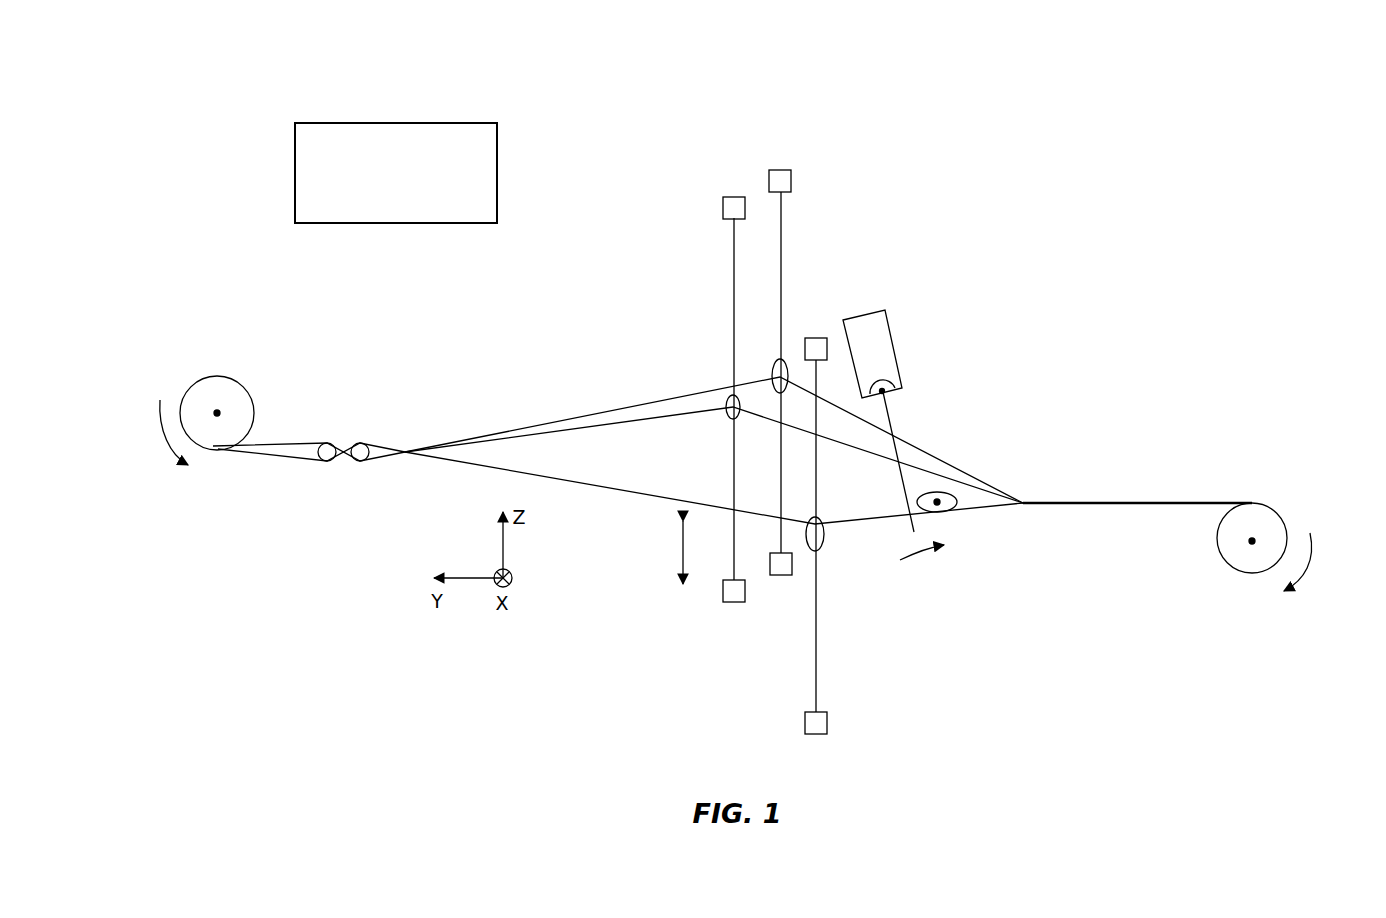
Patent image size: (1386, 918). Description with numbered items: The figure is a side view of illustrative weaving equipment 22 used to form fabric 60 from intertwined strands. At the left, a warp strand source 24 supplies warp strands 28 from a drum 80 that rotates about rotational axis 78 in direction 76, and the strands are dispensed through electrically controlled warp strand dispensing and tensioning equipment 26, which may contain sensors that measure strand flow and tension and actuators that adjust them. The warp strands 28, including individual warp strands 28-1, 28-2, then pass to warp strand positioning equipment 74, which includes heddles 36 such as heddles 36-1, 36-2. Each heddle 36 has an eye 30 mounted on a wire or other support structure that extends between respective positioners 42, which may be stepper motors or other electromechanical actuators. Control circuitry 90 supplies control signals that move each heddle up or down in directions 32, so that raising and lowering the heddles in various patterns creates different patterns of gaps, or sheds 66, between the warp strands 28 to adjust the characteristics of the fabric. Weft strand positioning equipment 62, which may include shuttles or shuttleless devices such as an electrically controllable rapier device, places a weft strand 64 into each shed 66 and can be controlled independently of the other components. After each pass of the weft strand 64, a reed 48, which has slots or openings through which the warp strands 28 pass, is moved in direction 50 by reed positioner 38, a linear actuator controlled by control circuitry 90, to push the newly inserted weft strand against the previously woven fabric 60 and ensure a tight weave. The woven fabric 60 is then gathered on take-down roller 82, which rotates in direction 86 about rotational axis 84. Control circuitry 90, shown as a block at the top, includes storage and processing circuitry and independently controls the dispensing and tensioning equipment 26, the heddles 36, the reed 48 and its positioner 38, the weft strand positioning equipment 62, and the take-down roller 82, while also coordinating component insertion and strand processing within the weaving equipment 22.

The weaving equipment 22 is at (947, 115).
The warp strand source 24 is at (209, 514).
The warp strand dispensing and tensioning equipment 26 is at (312, 488).
The warp strands 28 is at (618, 424).
The warp strand 28-1 is at (844, 445).
The warp strand 28-2 is at (878, 433).
The eye 30 is at (727, 399).
The directions 32 is at (676, 545).
The heddles 36 is at (718, 415).
The heddle 36-1 is at (713, 178).
The heddle 36-2 is at (800, 150).
The reed positioner 38 is at (902, 325).
The positioners 42 is at (723, 203).
The reed 48 is at (912, 525).
The direction 50 is at (920, 565).
The fabric 60 is at (1140, 502).
The weft strand positioning equipment 62 is at (958, 505).
The weft strand 64 is at (939, 499).
The shed 66 is at (920, 487).
The warp strand positioning equipment 74 is at (627, 104).
The direction 76 is at (160, 437).
The rotational axis 78 is at (222, 411).
The drum 80 is at (208, 378).
The take-down roller 82 is at (1217, 548).
The rotational axis 84 is at (1252, 545).
The direction 86 is at (1310, 565).
The control circuitry 90 is at (395, 122).